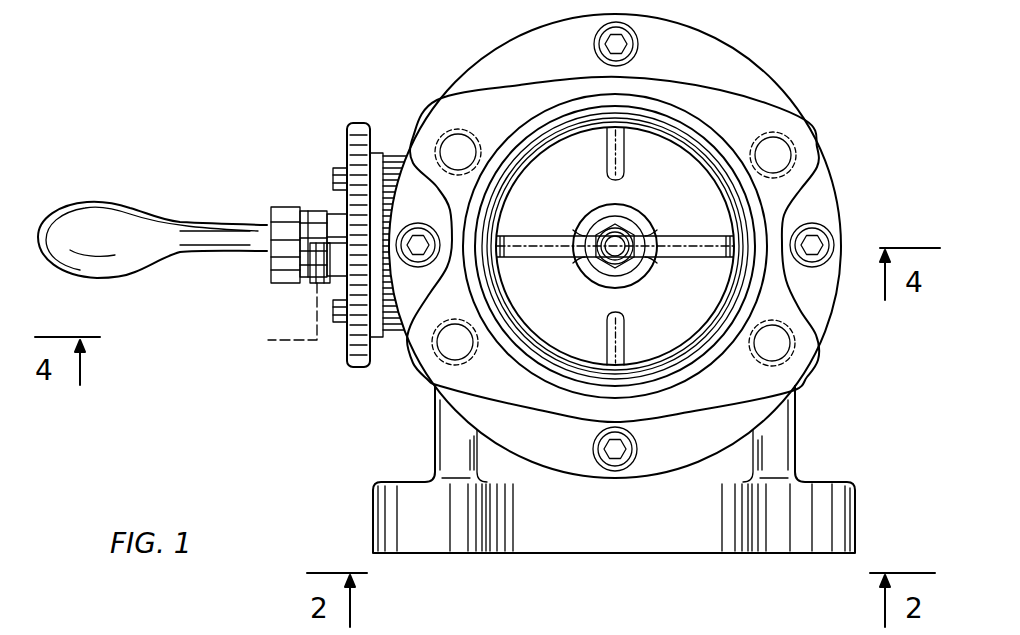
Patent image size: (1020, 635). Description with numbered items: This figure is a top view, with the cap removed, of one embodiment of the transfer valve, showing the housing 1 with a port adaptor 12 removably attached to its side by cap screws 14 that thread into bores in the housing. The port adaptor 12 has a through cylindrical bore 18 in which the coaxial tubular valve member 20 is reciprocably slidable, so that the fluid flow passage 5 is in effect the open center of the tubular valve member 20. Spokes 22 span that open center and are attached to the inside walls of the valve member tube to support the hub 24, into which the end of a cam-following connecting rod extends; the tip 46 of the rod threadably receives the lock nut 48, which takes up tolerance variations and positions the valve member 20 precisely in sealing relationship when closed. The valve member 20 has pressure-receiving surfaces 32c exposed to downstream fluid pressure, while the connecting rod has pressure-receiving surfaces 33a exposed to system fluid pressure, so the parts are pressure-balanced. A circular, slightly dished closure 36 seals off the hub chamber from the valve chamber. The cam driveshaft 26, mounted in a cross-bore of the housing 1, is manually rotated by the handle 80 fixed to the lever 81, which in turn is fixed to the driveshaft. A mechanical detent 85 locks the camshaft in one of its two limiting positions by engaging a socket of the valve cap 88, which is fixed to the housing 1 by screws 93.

The housing 1 is at (614, 283).
The port adaptor 12 is at (718, 122).
The cap screws 14 is at (822, 242).
The cylindrical bore 18 is at (543, 355).
The tubular valve member 20 is at (520, 163).
The pressure-receiving surfaces 32c is at (548, 130).
The spokes 22 is at (556, 240).
The fluid flow passage 5 is at (706, 308).
The closure 36 is at (655, 350).
The hub 24 is at (638, 232).
The lock nut 48 is at (628, 228).
The tip 46 is at (625, 262).
The pressure-receiving surfaces 33a is at (608, 265).
The handle 80 is at (128, 212).
The lever 81 is at (283, 225).
The mechanical detent 85 is at (318, 235).
The cam driveshaft 26 is at (330, 270).
The valve cap 88 is at (353, 122).
The screws 93 is at (338, 165).